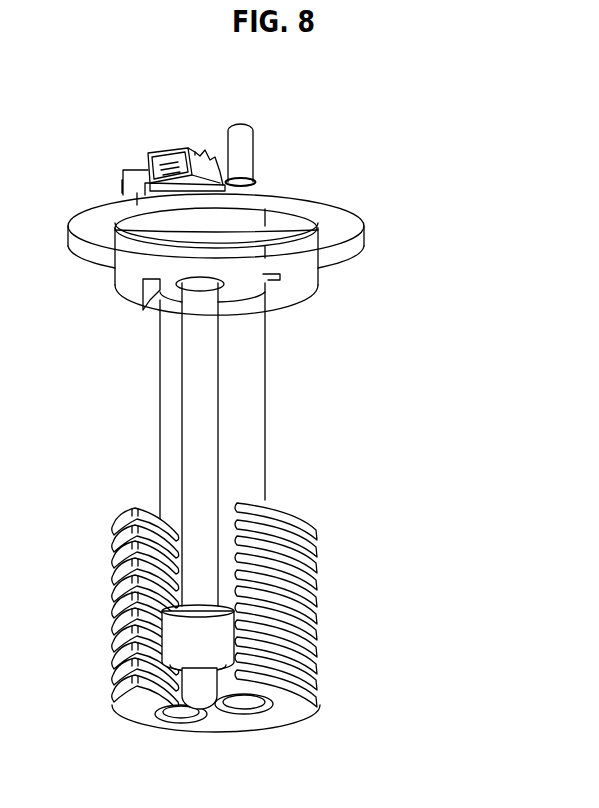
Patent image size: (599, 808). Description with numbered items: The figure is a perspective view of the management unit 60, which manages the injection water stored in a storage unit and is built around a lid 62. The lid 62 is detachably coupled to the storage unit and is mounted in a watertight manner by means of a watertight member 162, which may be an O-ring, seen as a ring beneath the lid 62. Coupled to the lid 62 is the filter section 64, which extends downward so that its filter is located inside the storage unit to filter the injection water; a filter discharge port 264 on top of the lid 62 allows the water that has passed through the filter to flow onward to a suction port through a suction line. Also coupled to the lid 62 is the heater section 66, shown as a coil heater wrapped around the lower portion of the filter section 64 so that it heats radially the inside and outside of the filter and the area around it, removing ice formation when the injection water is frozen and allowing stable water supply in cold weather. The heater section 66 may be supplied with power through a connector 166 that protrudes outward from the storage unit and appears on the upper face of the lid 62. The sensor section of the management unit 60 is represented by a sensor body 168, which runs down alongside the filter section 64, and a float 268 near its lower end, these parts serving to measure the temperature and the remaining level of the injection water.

The management unit 60 is at (370, 168).
The lid 62 is at (363, 226).
The filter section 64 is at (278, 406).
The heater section 66 is at (320, 598).
The watertight member 162 is at (327, 263).
The connector 166 is at (134, 166).
The sensor body 168 is at (228, 457).
The filter discharge port 264 is at (244, 153).
The float 268 is at (222, 630).